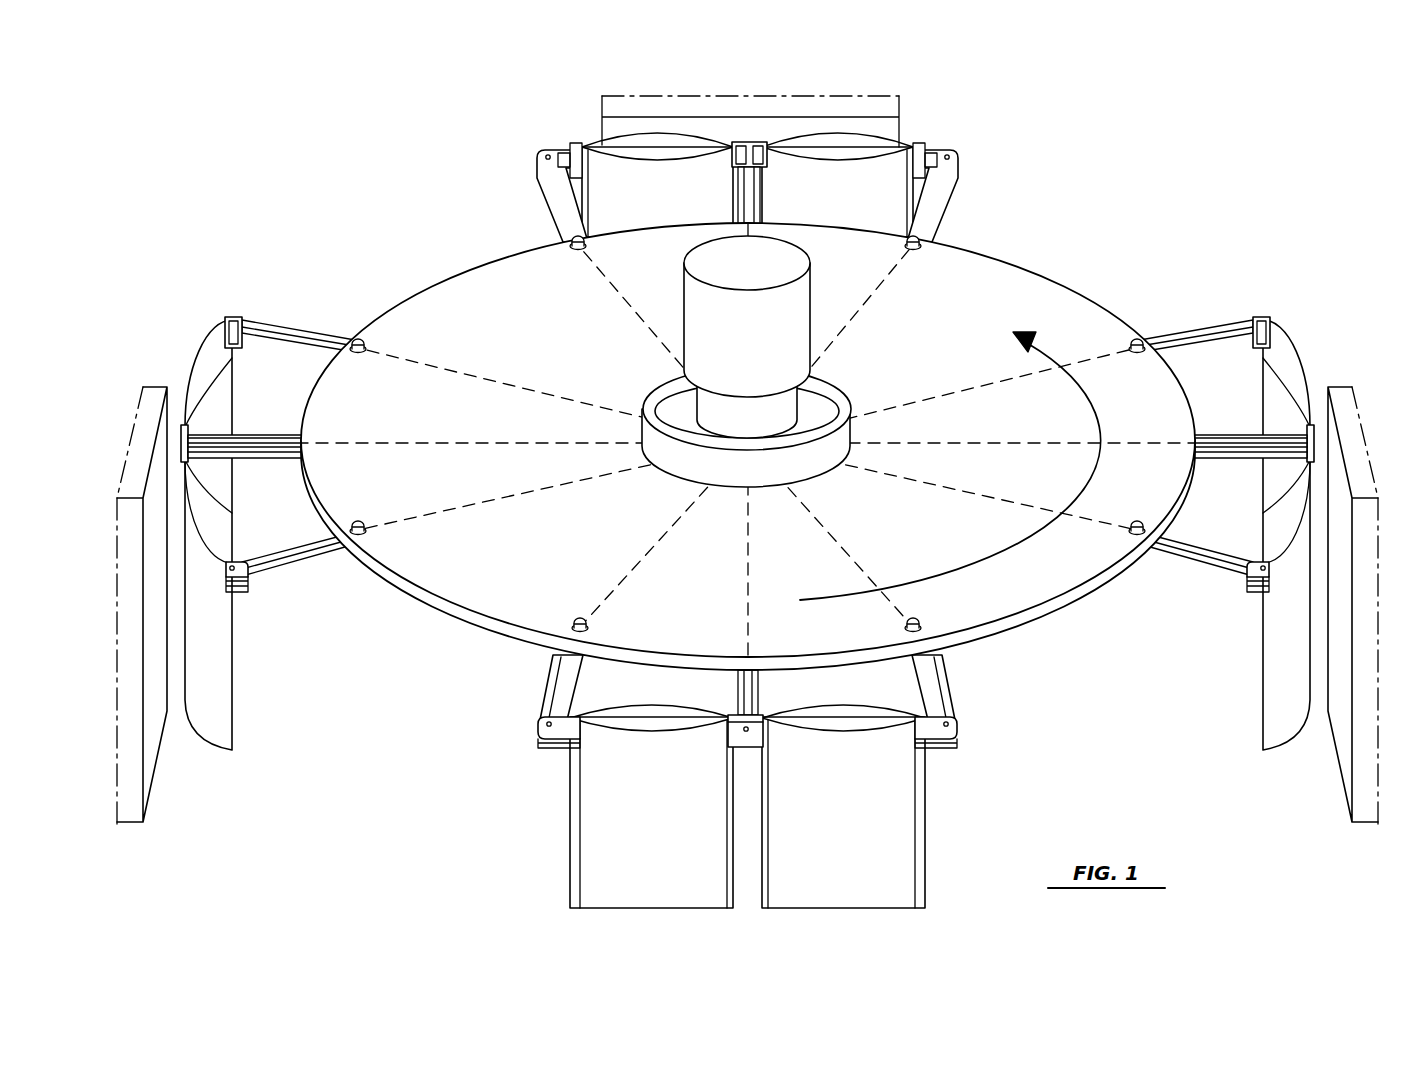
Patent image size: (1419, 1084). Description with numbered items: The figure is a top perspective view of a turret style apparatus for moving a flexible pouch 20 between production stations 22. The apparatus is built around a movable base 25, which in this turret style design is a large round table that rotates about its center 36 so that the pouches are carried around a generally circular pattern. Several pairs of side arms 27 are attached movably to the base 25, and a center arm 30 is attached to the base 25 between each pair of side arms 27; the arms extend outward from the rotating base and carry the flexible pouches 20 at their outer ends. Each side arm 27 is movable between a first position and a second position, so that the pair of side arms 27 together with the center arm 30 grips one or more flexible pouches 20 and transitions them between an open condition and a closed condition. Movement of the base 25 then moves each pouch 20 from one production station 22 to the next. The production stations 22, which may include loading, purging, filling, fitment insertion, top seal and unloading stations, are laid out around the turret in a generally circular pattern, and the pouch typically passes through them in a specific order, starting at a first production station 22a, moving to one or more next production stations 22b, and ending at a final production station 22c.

The flexible pouch 20 is at (640, 204).
The production stations 22 is at (746, 483).
The first production station 22a is at (1367, 806).
The next production station 22b is at (893, 131).
The final production station 22c is at (128, 806).
The movable base 25 is at (935, 347).
The side arms 27 is at (557, 190).
The center arm 30 is at (752, 193).
The center 36 is at (735, 342).